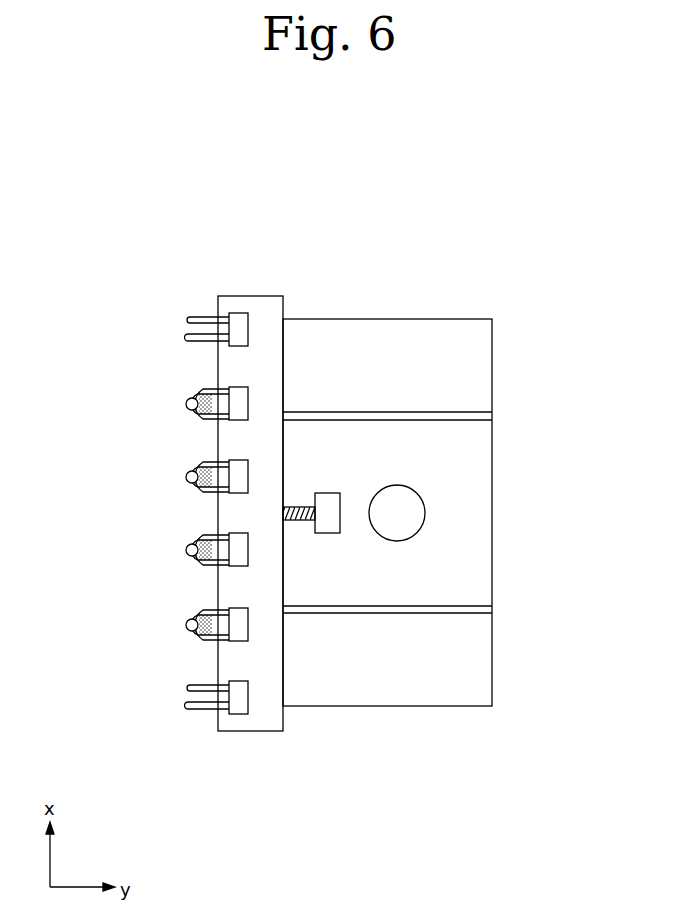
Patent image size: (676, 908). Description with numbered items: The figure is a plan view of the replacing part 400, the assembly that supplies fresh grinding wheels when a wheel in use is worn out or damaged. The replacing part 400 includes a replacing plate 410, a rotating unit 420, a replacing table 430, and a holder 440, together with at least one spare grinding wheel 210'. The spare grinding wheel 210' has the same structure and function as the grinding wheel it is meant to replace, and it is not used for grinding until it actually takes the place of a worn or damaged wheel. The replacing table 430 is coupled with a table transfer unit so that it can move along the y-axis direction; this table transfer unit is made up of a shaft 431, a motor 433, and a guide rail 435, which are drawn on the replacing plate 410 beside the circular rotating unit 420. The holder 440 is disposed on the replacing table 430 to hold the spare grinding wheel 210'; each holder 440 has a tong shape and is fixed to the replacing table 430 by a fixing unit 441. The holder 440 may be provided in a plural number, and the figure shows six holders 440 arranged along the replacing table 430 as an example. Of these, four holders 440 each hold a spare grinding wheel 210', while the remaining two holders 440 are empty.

The replacing part 400 is at (571, 222).
The replacing plate 410 is at (376, 337).
The rotating unit 420 is at (415, 512).
The replacing table 430 is at (268, 312).
The shaft 431 is at (300, 506).
The motor 433 is at (327, 532).
The guide rail 435 is at (467, 412).
The holder 440 is at (192, 309).
The fixing unit 441 is at (238, 320).
The spare grinding wheel 210' is at (152, 514).